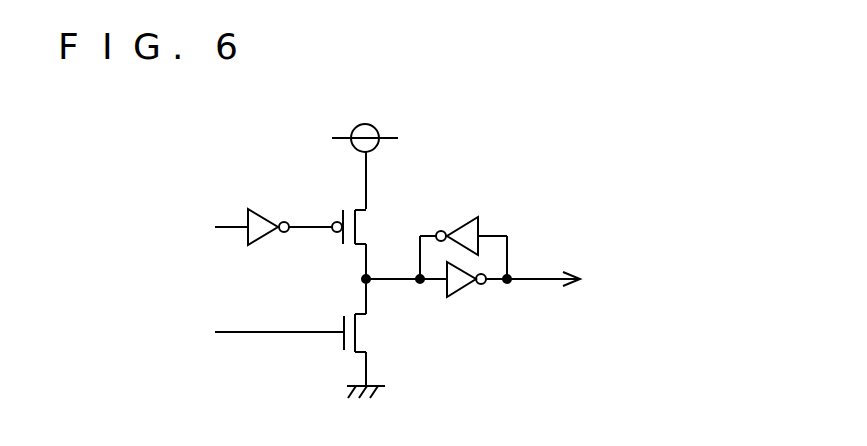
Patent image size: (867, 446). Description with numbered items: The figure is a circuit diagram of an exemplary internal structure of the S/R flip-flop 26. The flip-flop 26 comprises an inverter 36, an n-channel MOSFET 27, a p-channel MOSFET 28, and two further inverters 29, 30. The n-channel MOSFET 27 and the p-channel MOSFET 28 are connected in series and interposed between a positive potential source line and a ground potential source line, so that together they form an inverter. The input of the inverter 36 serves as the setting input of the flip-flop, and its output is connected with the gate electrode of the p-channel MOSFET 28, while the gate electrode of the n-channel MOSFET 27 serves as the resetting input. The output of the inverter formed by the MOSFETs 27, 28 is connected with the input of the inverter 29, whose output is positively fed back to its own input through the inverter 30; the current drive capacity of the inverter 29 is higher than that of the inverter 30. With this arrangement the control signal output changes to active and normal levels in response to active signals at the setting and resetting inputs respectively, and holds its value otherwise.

The S/R flip-flop 26 is at (628, 199).
The n-channel MOSFET 27 is at (368, 333).
The p-channel MOSFET 28 is at (368, 225).
The inverter 29 is at (463, 288).
The inverter 30 is at (478, 228).
The inverter 36 is at (270, 220).